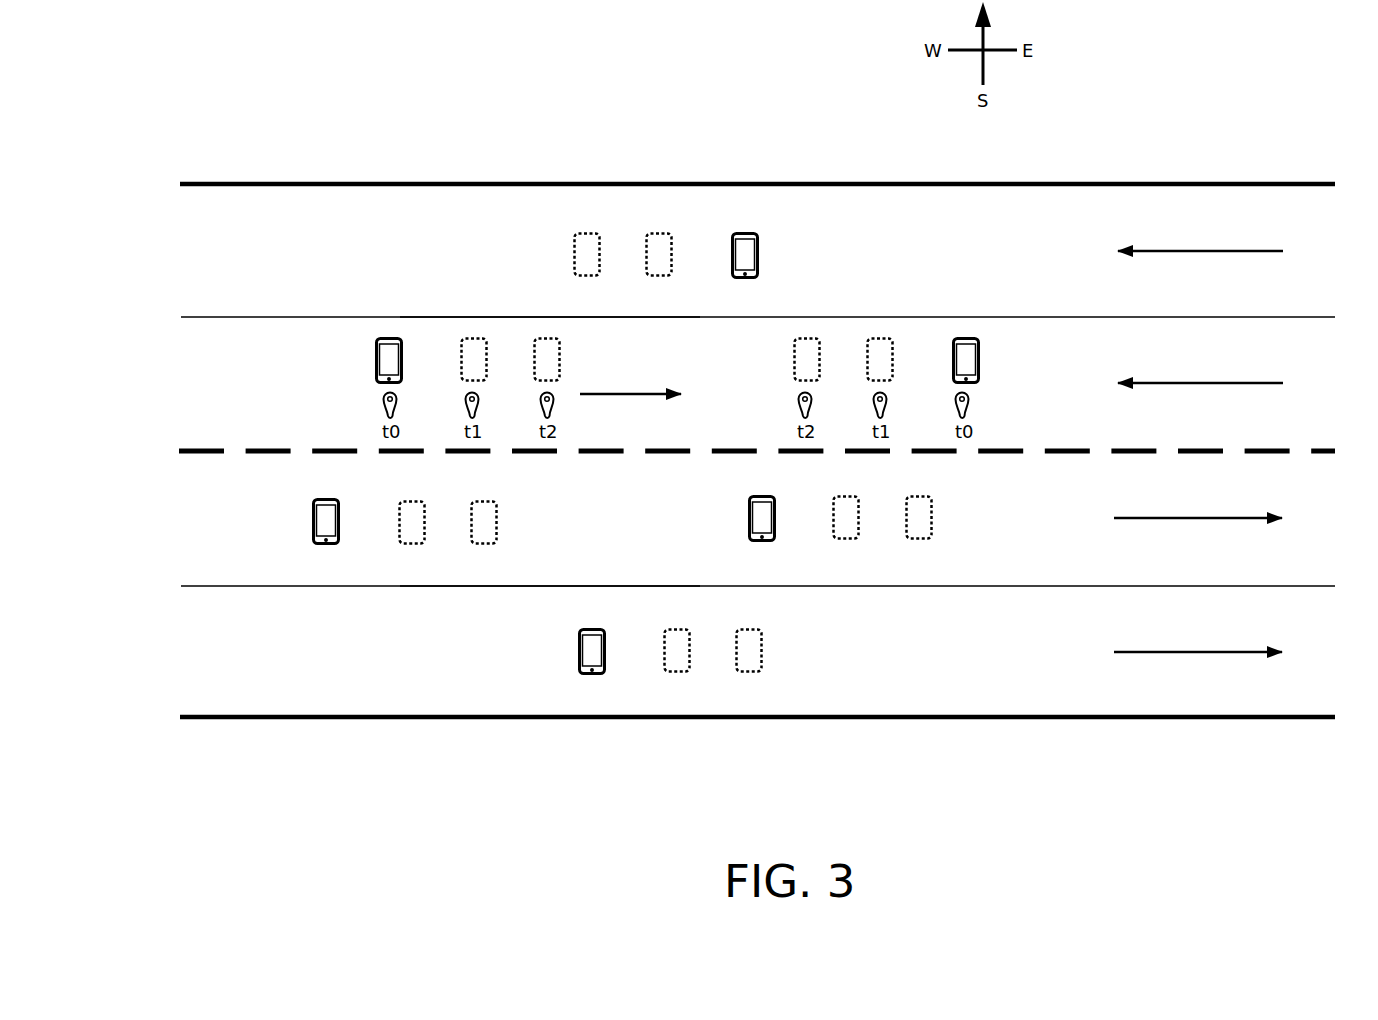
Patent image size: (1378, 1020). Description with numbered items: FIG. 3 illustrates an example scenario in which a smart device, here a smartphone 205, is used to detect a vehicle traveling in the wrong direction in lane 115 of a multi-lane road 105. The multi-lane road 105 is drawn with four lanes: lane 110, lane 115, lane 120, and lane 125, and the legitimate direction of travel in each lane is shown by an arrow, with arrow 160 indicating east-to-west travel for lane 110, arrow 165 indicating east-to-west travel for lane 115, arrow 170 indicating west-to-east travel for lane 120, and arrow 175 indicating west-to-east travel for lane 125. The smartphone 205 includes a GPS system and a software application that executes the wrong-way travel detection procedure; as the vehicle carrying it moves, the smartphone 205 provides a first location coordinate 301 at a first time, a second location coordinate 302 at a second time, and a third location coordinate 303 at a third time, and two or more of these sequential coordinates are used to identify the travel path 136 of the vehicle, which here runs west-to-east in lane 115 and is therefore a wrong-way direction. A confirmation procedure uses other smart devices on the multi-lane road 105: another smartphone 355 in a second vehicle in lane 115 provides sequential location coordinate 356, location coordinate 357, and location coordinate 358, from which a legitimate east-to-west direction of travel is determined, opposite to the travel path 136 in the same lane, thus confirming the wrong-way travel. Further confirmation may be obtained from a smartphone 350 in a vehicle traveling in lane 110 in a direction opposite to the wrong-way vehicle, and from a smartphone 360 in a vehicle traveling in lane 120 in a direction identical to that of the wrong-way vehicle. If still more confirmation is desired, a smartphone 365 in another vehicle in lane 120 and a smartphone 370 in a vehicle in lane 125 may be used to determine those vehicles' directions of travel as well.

The multi-lane road 105 is at (499, 146).
The lane 110 is at (166, 255).
The lane 115 is at (177, 382).
The lane 120 is at (177, 540).
The lane 125 is at (187, 667).
The travel path 136 is at (615, 394).
The arrow 160 is at (1182, 251).
The arrow 165 is at (1182, 383).
The arrow 170 is at (1182, 518).
The arrow 175 is at (1182, 652).
The smartphone 205 is at (375, 358).
The first location coordinate 301 is at (382, 403).
The second location coordinate 302 is at (464, 403).
The third location coordinate 303 is at (539, 403).
The smartphone 350 is at (602, 257).
The smartphone 355 is at (821, 358).
The location coordinate 356 is at (970, 404).
The location coordinate 357 is at (888, 404).
The location coordinate 358 is at (813, 404).
The smartphone 360 is at (312, 522).
The smartphone 365 is at (748, 520).
The smartphone 370 is at (578, 653).